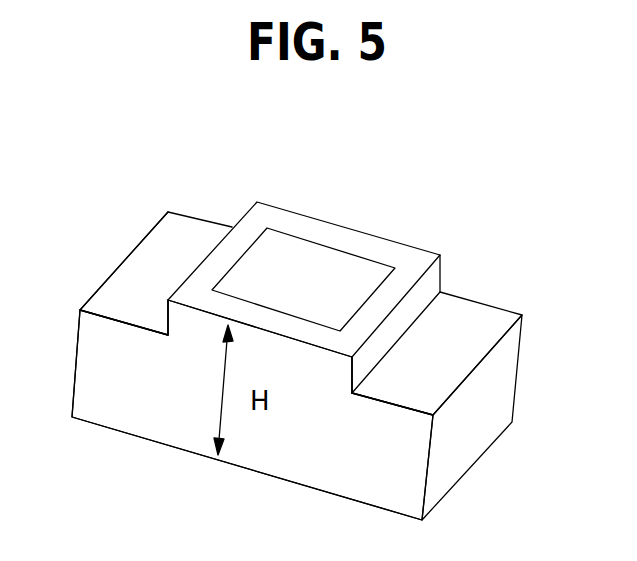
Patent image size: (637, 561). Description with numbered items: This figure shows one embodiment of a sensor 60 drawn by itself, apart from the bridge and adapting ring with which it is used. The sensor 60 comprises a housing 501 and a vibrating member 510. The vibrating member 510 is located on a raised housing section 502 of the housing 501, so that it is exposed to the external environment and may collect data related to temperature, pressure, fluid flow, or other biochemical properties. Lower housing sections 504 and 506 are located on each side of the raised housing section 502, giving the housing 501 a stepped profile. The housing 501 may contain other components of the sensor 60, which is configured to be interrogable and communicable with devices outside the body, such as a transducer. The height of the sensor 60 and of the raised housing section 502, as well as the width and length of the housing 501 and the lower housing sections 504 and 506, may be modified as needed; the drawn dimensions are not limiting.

The sensor 60 is at (150, 142).
The housing 501 is at (553, 361).
The raised housing section 502 is at (428, 278).
The lower housing section 504 is at (117, 267).
The lower housing section 506 is at (457, 368).
The vibrating member 510 is at (319, 258).